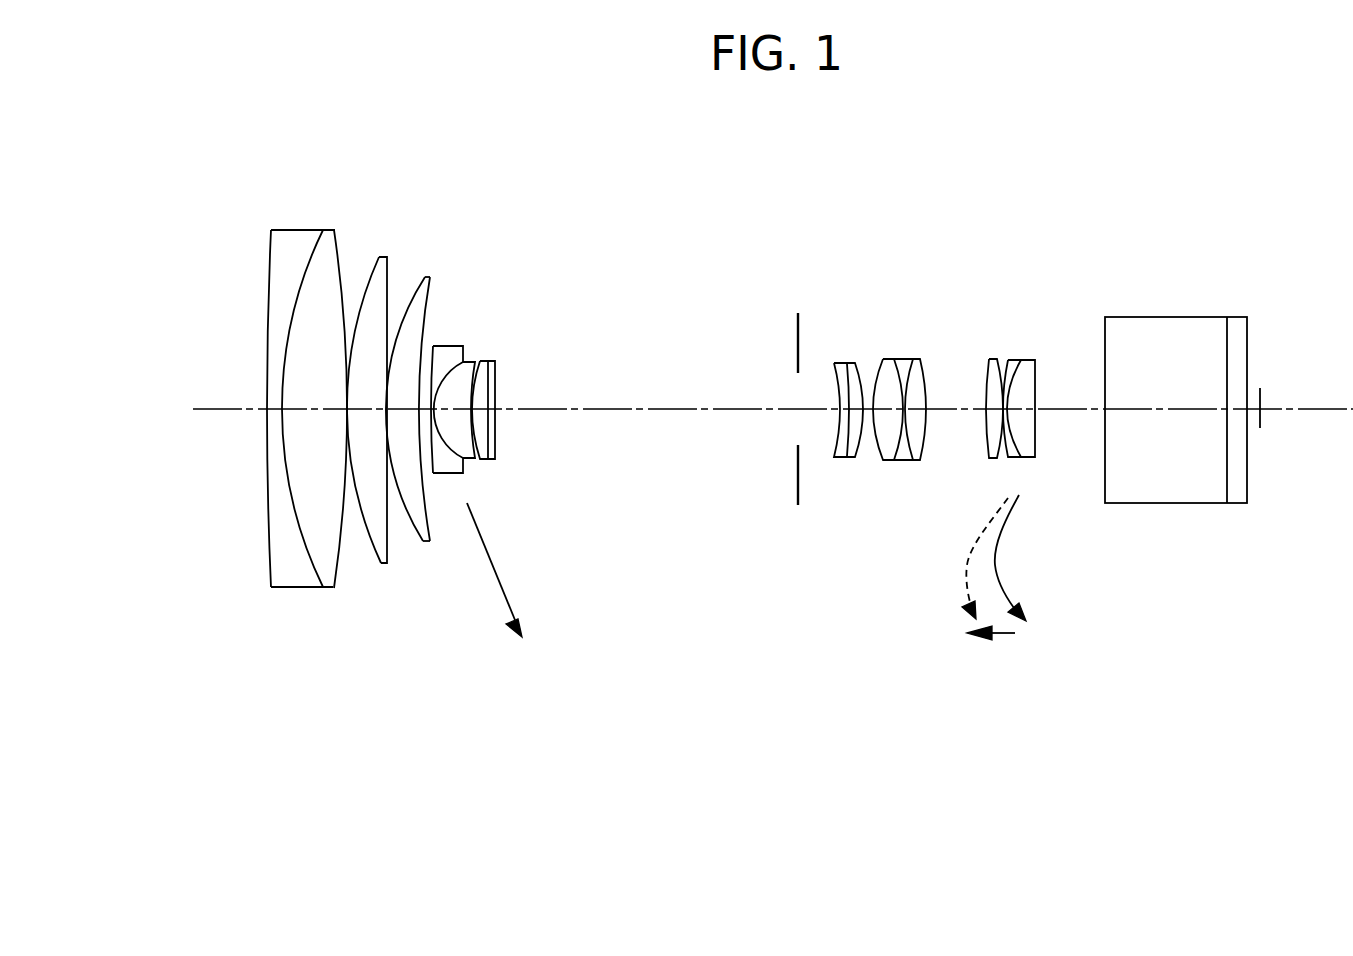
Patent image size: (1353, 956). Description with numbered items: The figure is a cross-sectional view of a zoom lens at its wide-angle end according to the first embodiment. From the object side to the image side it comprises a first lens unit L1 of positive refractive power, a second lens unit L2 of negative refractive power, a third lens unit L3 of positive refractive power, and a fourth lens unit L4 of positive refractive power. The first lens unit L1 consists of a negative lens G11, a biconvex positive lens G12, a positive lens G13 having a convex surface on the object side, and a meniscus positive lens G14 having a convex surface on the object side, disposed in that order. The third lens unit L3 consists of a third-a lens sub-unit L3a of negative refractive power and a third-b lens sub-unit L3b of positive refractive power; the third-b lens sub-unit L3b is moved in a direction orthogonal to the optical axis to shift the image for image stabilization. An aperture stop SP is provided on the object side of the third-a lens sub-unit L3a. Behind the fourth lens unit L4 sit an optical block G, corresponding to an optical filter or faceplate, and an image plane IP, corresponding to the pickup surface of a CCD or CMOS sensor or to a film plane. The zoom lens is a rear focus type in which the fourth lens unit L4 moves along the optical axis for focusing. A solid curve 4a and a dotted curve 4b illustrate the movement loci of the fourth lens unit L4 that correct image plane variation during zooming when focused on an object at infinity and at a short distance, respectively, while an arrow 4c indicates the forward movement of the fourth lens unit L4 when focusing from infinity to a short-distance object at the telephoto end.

The first lens unit L1 is at (466, 230).
The second lens unit L2 is at (508, 483).
The third lens unit L3 is at (950, 308).
The third-a lens sub-unit L3a is at (868, 357).
The third-b lens sub-unit L3b is at (933, 357).
The fourth lens unit L4 is at (1052, 355).
The negative lens G11 is at (287, 577).
The biconvex positive lens G12 is at (330, 555).
The positive lens G13 is at (380, 560).
The meniscus positive lens G14 is at (420, 540).
The aperture stop SP is at (795, 333).
The optical block G is at (1267, 308).
The image plane IP is at (1262, 403).
The solid curve 4a is at (995, 563).
The dotted curve 4b is at (967, 563).
The arrow 4c is at (995, 634).